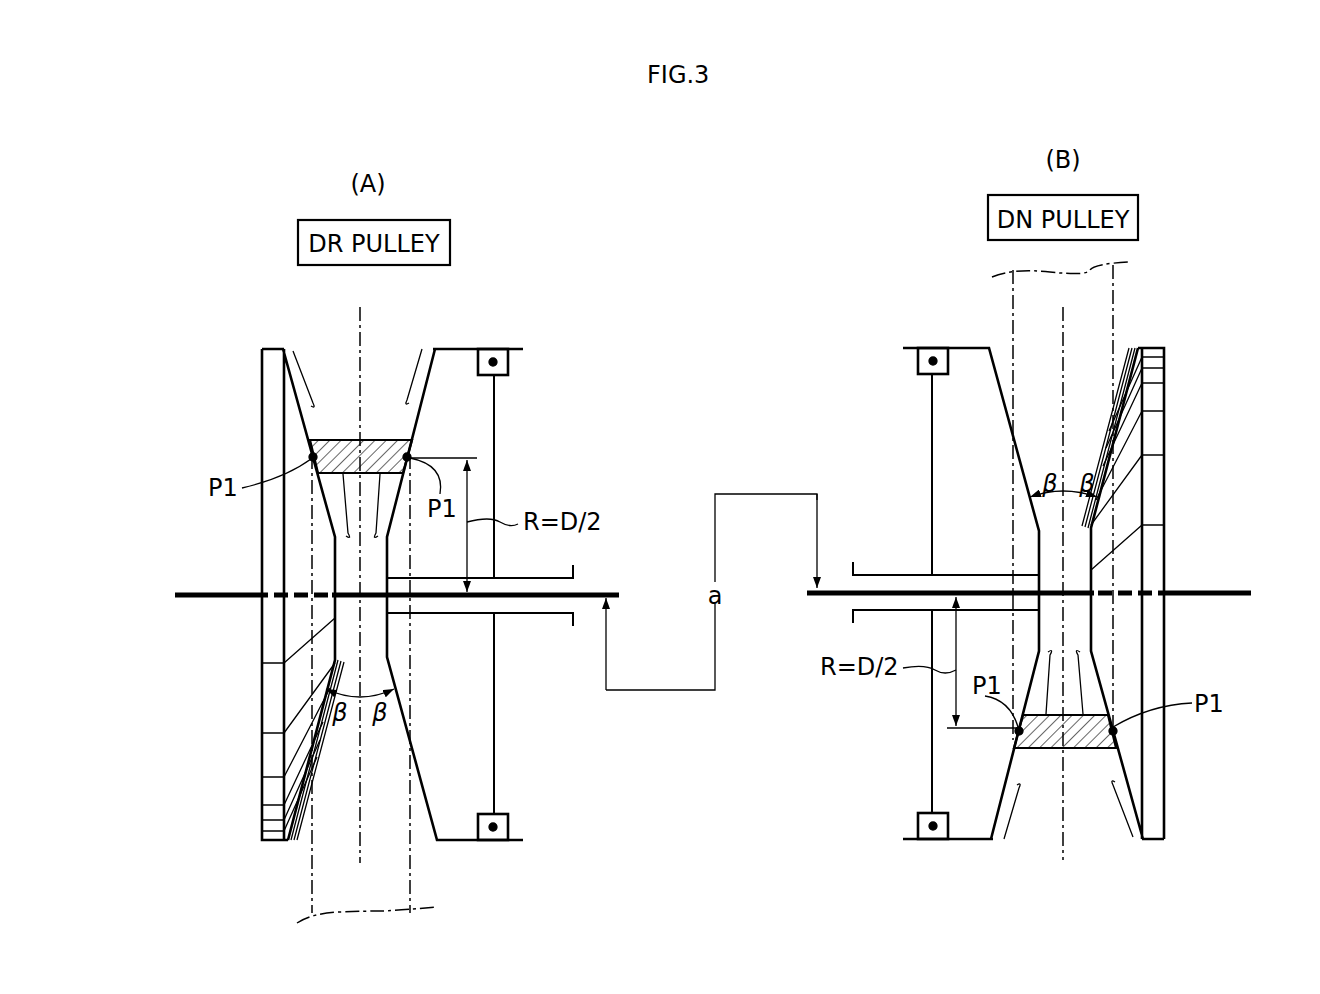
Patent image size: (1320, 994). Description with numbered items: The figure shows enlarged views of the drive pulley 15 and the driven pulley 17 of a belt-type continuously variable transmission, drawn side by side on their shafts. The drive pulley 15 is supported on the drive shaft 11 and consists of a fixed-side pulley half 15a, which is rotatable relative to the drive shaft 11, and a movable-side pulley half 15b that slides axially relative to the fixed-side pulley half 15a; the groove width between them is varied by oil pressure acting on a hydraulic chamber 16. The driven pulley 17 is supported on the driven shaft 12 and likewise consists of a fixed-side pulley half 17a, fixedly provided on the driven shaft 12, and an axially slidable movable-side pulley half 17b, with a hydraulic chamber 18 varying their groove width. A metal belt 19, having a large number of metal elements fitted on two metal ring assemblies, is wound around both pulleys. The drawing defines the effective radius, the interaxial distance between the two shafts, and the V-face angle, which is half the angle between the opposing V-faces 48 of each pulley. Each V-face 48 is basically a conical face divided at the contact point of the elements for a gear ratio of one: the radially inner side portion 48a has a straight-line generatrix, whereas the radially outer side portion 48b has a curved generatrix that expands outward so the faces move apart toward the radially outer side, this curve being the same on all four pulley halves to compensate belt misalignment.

The drive shaft 11 is at (590, 593).
The driven shaft 12 is at (1226, 596).
The drive pulley 15 is at (568, 408).
The fixed-side pulley half 15a is at (262, 412).
The movable-side pulley half 15b is at (494, 443).
The hydraulic chamber 16 is at (460, 666).
The driven pulley 17 is at (1192, 390).
The fixed-side pulley half 17a is at (1163, 480).
The movable-side pulley half 17b is at (932, 446).
The hydraulic chamber 18 is at (992, 541).
The metal belt 19 is at (312, 880).
The V-face 48 is at (713, 595).
The radially inner side portion 48a is at (378, 441).
The radially outer side portion 48b is at (403, 400).